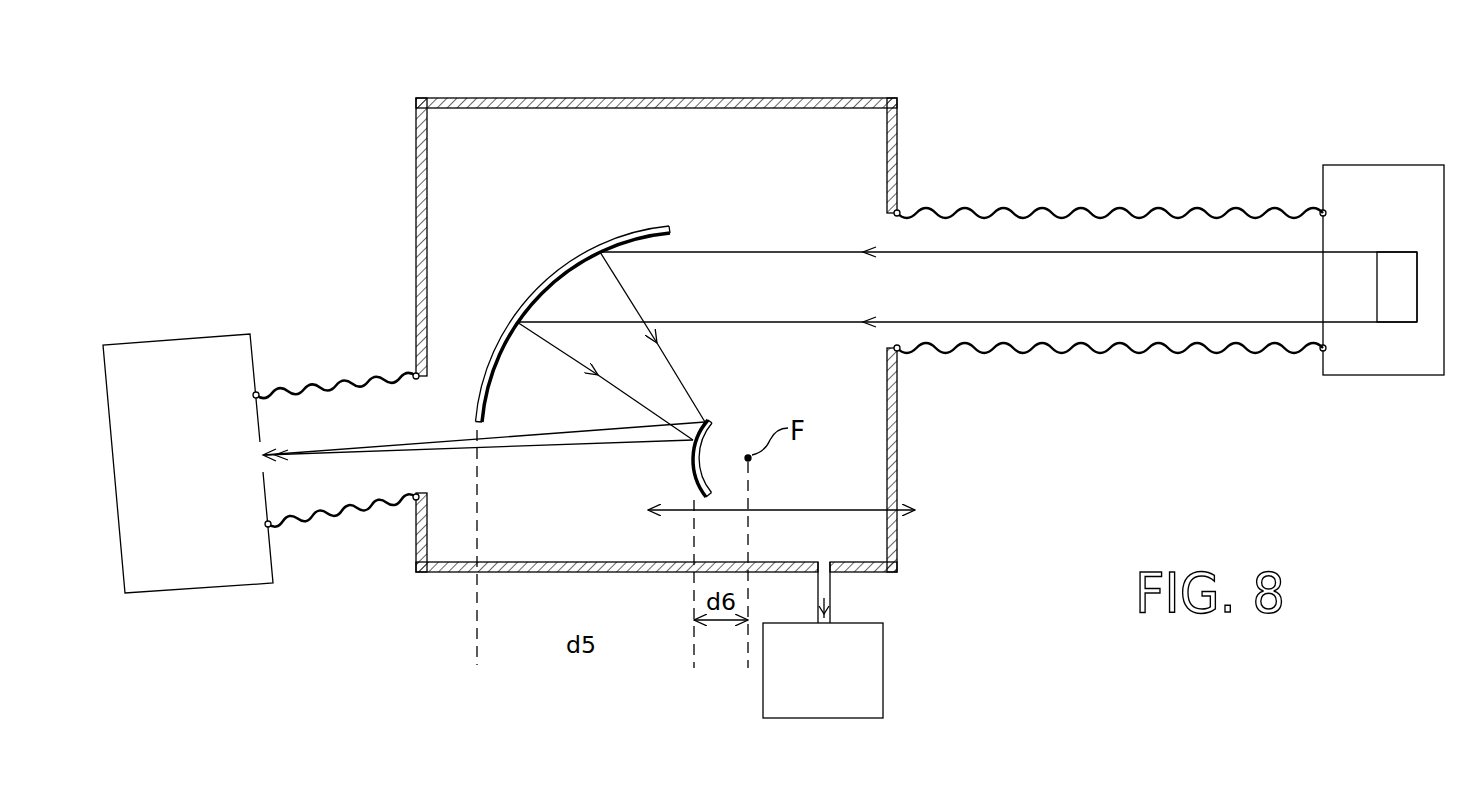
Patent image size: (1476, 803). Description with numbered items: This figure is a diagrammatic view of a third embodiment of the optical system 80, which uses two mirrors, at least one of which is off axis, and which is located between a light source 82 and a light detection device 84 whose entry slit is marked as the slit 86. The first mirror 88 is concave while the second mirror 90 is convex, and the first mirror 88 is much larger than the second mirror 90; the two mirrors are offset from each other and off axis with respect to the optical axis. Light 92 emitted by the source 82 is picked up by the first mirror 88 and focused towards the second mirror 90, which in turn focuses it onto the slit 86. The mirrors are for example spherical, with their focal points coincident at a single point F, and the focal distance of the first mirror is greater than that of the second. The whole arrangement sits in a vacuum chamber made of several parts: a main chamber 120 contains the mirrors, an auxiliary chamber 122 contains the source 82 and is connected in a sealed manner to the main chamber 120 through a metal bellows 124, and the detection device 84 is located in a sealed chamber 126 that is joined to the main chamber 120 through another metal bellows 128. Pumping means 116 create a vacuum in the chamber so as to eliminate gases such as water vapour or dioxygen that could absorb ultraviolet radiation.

The optical system 80 is at (764, 232).
The light source 82 is at (1392, 258).
The light detection device 84 is at (222, 337).
The entry slit 86 is at (268, 446).
The first mirror 88 is at (622, 243).
The second mirror 90 is at (713, 430).
The light 92 is at (1171, 250).
The pumping means 116 is at (882, 665).
The main chamber 120 is at (776, 105).
The auxiliary chamber 122 is at (1360, 168).
The metal bellows 124 is at (1080, 210).
The sealed chamber 126 is at (135, 343).
The metal bellows 128 is at (352, 514).